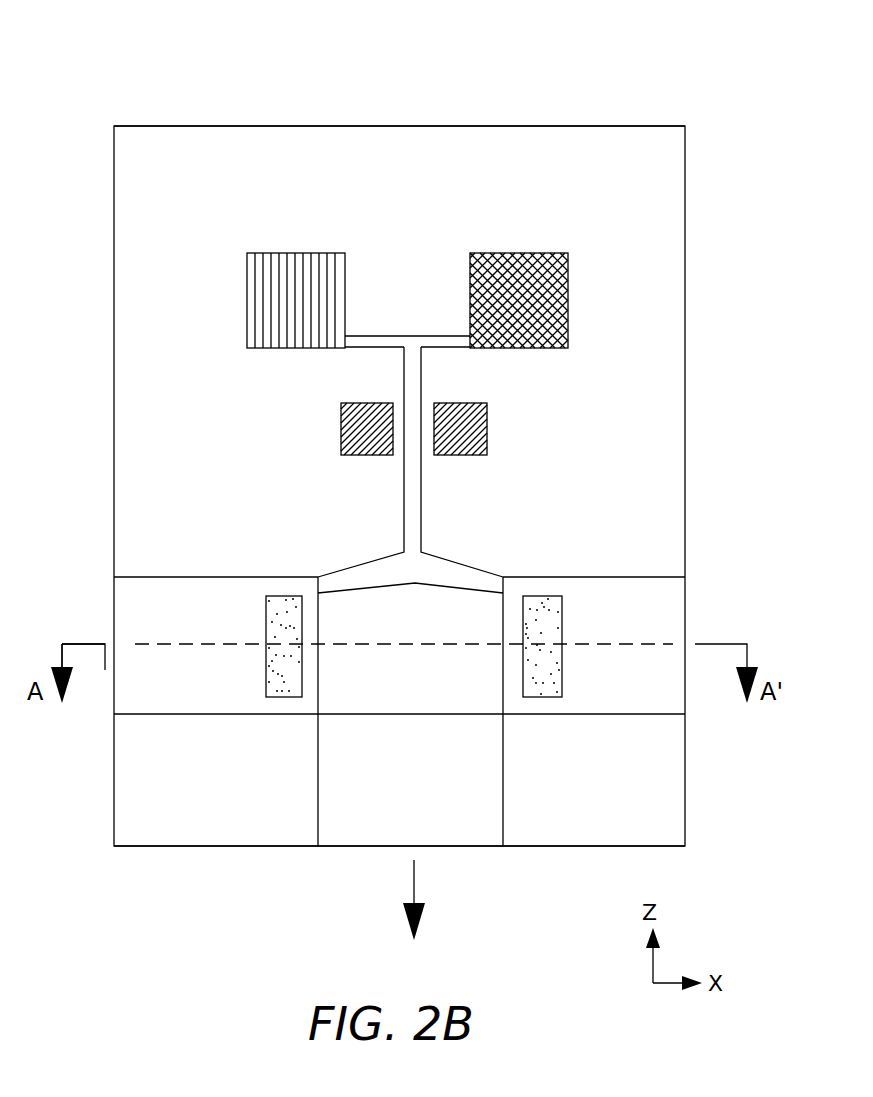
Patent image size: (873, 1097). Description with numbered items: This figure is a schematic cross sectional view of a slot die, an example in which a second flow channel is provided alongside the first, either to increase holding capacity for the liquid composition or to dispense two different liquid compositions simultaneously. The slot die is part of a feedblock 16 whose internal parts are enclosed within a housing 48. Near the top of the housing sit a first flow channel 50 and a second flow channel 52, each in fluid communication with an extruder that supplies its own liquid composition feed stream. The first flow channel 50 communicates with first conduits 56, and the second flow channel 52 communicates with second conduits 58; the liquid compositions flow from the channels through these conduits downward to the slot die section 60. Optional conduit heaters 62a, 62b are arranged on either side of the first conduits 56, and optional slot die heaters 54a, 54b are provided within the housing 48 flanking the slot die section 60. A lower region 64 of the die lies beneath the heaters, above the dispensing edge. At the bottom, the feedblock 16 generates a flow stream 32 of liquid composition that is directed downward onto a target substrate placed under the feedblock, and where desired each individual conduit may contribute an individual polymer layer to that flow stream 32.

The feedblock 16 is at (140, 44).
The housing 48 is at (378, 126).
The first flow channel 50 is at (513, 268).
The second flow channel 52 is at (292, 268).
The second conduits 58 is at (380, 340).
The first conduits 56 is at (412, 504).
The conduit heater 62a is at (358, 432).
The conduit heater 62b is at (474, 428).
The slot die heater 54a is at (277, 627).
The slot die heater 54b is at (540, 620).
The slot die section 60 is at (478, 683).
The lower layer 64 is at (102, 714).
The flow stream 32 is at (414, 880).